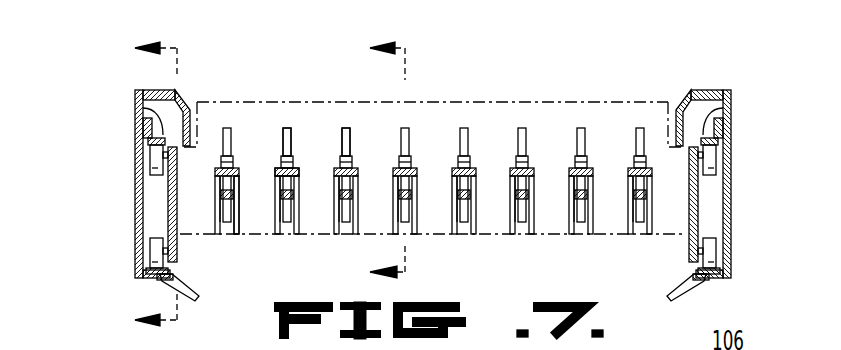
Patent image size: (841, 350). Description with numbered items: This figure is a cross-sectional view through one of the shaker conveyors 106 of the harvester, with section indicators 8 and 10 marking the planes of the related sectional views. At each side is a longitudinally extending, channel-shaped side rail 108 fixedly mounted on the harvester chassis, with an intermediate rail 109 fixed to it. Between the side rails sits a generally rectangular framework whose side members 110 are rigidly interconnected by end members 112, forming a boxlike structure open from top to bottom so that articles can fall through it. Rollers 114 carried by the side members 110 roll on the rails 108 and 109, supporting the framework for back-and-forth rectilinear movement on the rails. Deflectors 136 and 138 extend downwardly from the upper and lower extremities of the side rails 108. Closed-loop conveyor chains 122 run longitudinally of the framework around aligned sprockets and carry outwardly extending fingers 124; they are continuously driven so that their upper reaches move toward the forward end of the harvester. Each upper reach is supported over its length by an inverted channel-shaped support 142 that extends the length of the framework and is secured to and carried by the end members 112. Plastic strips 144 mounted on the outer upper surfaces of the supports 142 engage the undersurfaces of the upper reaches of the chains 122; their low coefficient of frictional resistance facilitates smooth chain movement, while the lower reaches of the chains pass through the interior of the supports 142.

The shaker conveyor 106 is at (547, 79).
The side rails 108 is at (137, 192).
The intermediate rail 109 is at (141, 108).
The side members 110 is at (175, 218).
The end members 112 is at (454, 102).
The rollers 114 is at (158, 155).
The conveyor chains 122 is at (278, 161).
The fingers 124 is at (341, 128).
The deflector 136 is at (184, 98).
The deflector 138 is at (200, 295).
The inverted channel-shaped supports 142 is at (237, 210).
The plastic strips 144 is at (298, 169).
The section line 8- 8 is at (146, 189).
The section line 10- 10 is at (375, 163).